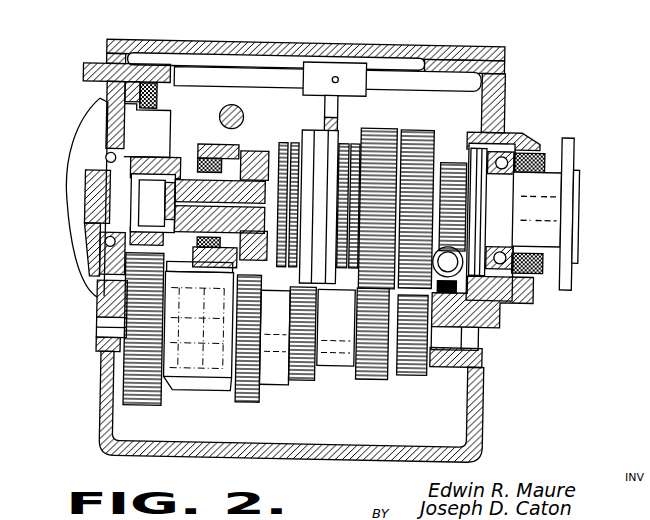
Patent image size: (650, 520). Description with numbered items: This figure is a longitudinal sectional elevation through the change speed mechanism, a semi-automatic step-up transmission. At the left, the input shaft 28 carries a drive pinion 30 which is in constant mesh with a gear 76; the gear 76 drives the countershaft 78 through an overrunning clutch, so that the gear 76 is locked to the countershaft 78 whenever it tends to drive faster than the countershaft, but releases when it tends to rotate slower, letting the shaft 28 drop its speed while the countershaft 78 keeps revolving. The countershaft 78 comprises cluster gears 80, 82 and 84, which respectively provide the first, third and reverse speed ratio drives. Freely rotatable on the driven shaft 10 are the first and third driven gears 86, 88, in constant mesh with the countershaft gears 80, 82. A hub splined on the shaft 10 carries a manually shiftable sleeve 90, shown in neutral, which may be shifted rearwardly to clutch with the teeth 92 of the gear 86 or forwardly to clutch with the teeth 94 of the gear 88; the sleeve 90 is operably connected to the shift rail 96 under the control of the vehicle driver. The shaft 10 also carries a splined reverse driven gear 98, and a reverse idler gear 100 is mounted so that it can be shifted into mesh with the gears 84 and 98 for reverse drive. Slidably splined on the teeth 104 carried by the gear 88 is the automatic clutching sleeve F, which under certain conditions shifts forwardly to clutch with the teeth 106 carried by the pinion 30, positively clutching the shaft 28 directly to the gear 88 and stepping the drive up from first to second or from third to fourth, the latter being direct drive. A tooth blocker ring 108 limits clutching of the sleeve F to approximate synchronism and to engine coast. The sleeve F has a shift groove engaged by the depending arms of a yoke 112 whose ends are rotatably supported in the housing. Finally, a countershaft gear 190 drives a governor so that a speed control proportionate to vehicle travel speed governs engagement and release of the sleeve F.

The driven shaft 10 is at (548, 197).
The shaft 28 is at (72, 219).
The drive pinion 30 is at (145, 146).
The gear 76 is at (147, 410).
The countershaft 78 is at (347, 368).
The cluster gear 80 is at (372, 378).
The cluster gear 82 is at (243, 406).
The cluster gear 84 is at (422, 378).
The first driven gear 86 is at (377, 127).
The third driven gear 88 is at (250, 150).
The manually shiftable sleeve 90 is at (297, 130).
The teeth 92 is at (352, 143).
The teeth 94 is at (280, 143).
The shift rail 96 is at (268, 72).
The reverse driven gear 98 is at (428, 127).
The reverse idler gear 100 is at (503, 299).
The teeth 104 is at (166, 88).
The teeth 106 is at (178, 155).
The tooth blocker ring 108 is at (150, 113).
The yoke 112 is at (231, 129).
The countershaft gear 190 is at (314, 331).
The automatic clutching sleeve F is at (203, 146).